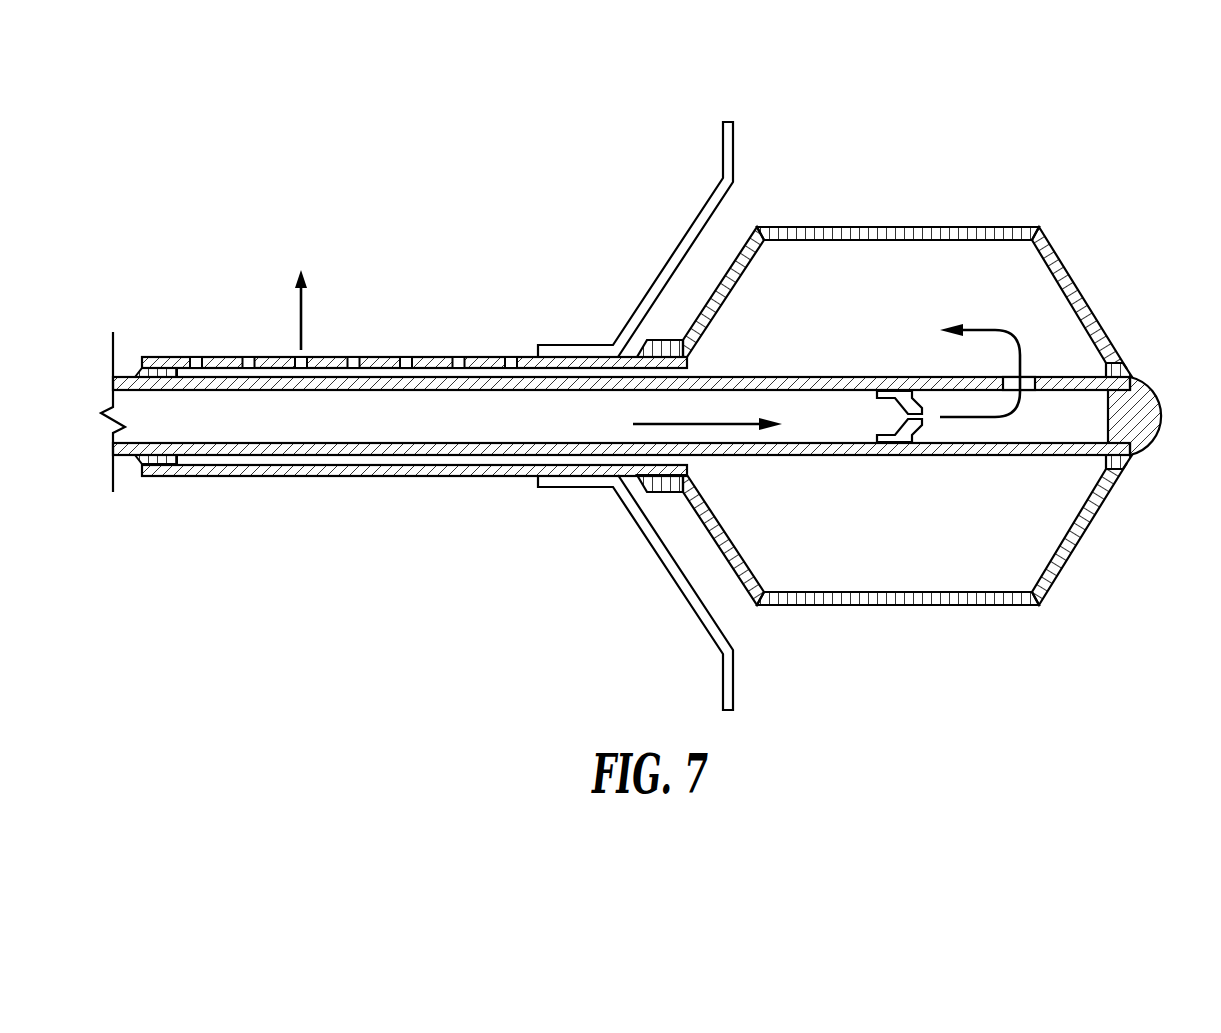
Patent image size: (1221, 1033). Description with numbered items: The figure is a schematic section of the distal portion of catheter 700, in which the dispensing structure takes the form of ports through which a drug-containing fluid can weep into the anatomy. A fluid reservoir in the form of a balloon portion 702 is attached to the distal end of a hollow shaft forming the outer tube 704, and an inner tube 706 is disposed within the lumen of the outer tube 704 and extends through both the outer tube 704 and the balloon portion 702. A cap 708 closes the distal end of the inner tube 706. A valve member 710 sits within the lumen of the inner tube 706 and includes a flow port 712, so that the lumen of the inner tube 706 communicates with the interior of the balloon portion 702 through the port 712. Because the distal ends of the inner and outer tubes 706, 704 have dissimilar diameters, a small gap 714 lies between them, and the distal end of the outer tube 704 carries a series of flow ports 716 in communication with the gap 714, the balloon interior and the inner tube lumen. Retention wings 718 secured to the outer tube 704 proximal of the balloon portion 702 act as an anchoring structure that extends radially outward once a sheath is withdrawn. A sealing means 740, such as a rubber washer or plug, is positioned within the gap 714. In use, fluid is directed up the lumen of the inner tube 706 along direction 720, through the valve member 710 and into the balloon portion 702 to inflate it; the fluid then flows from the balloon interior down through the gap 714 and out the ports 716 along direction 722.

The distal portion of catheter 700 is at (221, 110).
The balloon portion 702 is at (1077, 294).
The outer tube 704 is at (364, 468).
The inner tube 706 is at (288, 451).
The cap 708 is at (1140, 382).
The valve member 710 is at (898, 392).
The flow port 712 is at (1027, 393).
The gap 714 is at (686, 372).
The flow ports 716 is at (510, 356).
The retention wings 718 is at (723, 148).
The direction 720 is at (704, 413).
The direction 722 is at (294, 326).
The sealing means 740 is at (138, 461).